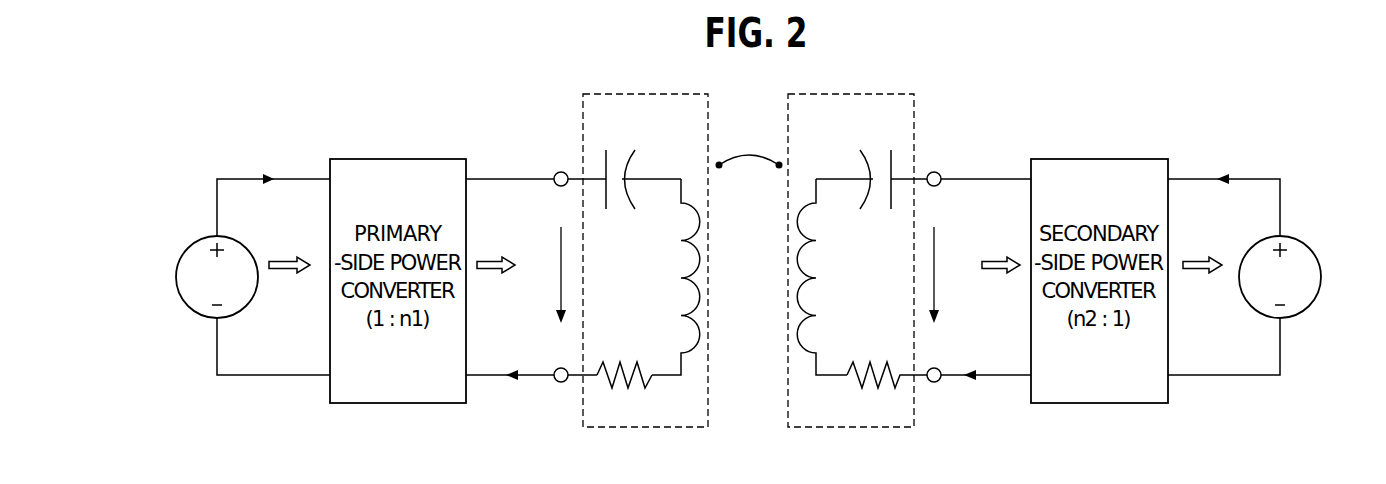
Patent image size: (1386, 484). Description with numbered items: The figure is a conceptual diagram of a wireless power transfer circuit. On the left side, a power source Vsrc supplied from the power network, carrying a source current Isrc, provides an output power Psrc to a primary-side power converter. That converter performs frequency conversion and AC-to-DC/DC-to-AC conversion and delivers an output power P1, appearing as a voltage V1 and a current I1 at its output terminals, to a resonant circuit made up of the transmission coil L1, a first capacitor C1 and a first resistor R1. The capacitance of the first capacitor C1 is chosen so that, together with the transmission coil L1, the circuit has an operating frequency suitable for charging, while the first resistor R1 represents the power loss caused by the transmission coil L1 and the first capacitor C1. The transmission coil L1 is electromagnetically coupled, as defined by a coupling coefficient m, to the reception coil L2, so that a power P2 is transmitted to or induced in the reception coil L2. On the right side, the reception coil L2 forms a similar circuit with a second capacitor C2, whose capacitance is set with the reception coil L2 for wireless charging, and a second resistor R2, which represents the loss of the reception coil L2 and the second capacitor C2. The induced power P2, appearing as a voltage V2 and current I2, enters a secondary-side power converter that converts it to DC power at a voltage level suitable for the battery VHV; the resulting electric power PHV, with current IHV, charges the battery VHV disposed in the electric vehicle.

The power source Vsrc is at (195, 277).
The source current Isrc is at (272, 164).
The output power Psrc is at (288, 248).
The output power of primary-side power converter P1 is at (496, 248).
The primary-side voltage V1 is at (550, 275).
The primary-side current I1 is at (514, 360).
The first capacitor C1 is at (643, 161).
The transmission coil L1 is at (676, 277).
The first resistor R1 is at (624, 358).
The coupling coefficient m is at (749, 148).
The second capacitor C2 is at (871, 161).
The reception coil L2 is at (822, 277).
The second resistor R2 is at (887, 358).
The secondary-side voltage V2 is at (947, 275).
The secondary-side current I2 is at (972, 360).
The power induced in reception coil P2 is at (1001, 249).
The electric power PHV is at (1199, 249).
The high-voltage battery current IHV is at (1223, 164).
The battery VHV is at (1306, 277).